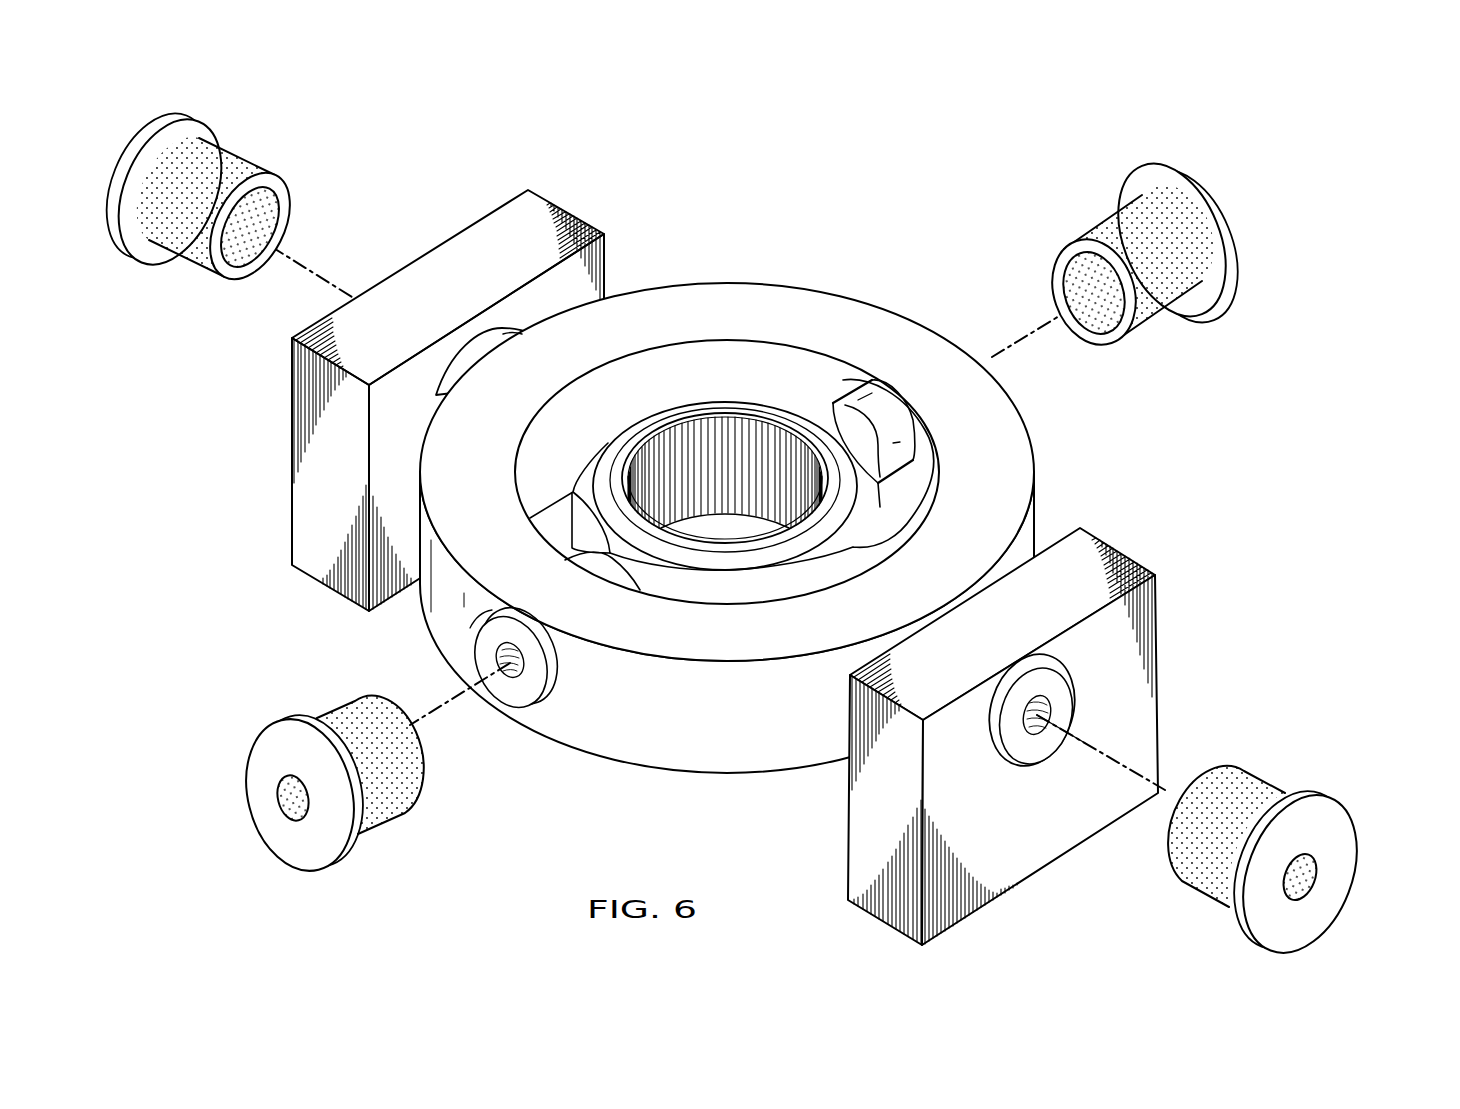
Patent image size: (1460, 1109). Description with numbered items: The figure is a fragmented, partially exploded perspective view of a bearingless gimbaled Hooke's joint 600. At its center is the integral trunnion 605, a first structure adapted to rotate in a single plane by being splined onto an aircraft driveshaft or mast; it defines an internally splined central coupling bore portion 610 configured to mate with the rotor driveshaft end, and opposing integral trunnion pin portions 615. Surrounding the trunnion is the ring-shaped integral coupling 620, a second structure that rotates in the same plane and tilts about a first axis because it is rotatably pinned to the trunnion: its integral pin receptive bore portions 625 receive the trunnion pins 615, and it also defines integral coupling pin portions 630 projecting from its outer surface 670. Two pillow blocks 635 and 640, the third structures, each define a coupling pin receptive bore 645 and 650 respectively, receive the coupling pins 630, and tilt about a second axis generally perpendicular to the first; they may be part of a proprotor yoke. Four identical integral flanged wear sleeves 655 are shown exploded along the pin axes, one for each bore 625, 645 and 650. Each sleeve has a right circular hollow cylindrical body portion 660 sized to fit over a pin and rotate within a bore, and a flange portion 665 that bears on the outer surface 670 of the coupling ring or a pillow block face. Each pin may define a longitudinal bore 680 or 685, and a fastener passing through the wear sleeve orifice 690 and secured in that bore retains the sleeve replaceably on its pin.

The bearingless gimbaled Hooke's joint 600 is at (1287, 114).
The integral trunnion 605 is at (755, 469).
The internally splined central driveshaft/mast coupling bore portion 610 is at (716, 413).
The integral trunnion pin portions 615 is at (912, 478).
The integral coupling 620 is at (727, 527).
The integral pin receptive bore portions 625 is at (831, 380).
The integral coupling pin portions 630 is at (505, 325).
The pillow block 635 is at (572, 188).
The pillow block 640 is at (828, 850).
The coupling pin receptive bore 645 is at (452, 355).
The coupling pin receptive bore 650 is at (1092, 684).
The integral flanged wear sleeve 655 is at (768, 511).
The right circular hollow cylindrical body portion 660 is at (255, 162).
The flange portion 665 is at (130, 178).
The outer surface 670 is at (677, 740).
The longitudinal bore 680 is at (1046, 706).
The longitudinal bore 685 is at (508, 662).
The wear sleeve orifice 690 is at (287, 800).